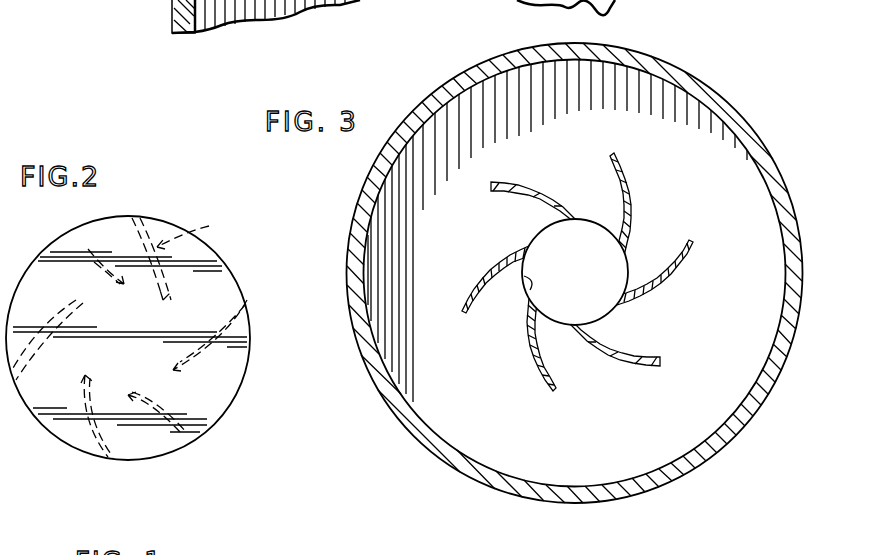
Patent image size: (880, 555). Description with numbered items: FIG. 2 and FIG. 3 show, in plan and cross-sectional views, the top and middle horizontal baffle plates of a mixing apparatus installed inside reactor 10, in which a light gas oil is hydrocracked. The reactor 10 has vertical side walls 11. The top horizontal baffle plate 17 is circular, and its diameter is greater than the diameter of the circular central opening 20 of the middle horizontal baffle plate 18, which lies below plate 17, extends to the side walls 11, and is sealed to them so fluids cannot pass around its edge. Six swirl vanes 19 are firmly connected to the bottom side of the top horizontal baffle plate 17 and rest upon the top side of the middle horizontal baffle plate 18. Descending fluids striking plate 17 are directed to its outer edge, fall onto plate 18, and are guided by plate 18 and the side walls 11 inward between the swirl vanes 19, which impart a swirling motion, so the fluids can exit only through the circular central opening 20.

In FIG. 3, the reactor 10 is at (694, 64).
In FIG. 3, the vertical side walls 11 is at (748, 410).
In FIG. 2, the top horizontal baffle plate 17 is at (102, 243).
In FIG. 3, the middle horizontal baffle plate 18 is at (738, 165).
In FIG. 2, the swirl vanes 19 is at (190, 234).
In FIG. 3, the swirl vanes 19 is at (677, 254).
In FIG. 3, the circular central opening 20 is at (524, 280).